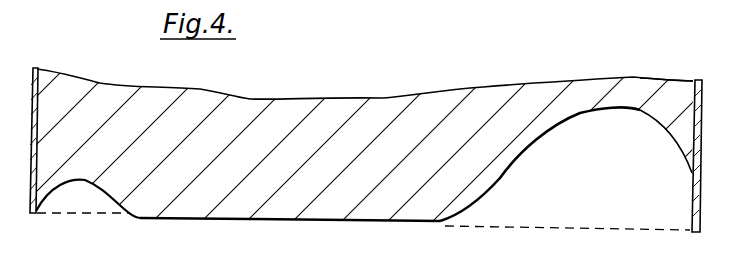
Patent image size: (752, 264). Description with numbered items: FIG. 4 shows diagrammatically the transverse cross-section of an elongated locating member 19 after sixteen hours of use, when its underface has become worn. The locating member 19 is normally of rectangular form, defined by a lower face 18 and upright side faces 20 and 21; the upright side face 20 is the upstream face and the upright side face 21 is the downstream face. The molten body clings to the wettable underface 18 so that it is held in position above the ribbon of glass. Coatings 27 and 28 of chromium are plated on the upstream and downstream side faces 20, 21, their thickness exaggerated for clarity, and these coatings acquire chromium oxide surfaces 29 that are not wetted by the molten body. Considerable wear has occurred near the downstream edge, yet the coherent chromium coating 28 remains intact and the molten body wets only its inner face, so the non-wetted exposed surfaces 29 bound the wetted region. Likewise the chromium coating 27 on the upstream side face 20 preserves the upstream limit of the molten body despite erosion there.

The underface 18 is at (350, 222).
The locating member 19 is at (366, 108).
The upright side face 20 is at (37, 96).
The upright side face 21 is at (693, 97).
The coating 27 is at (35, 168).
The coating 28 is at (692, 176).
The chromium oxide surfaces 29 is at (32, 78).